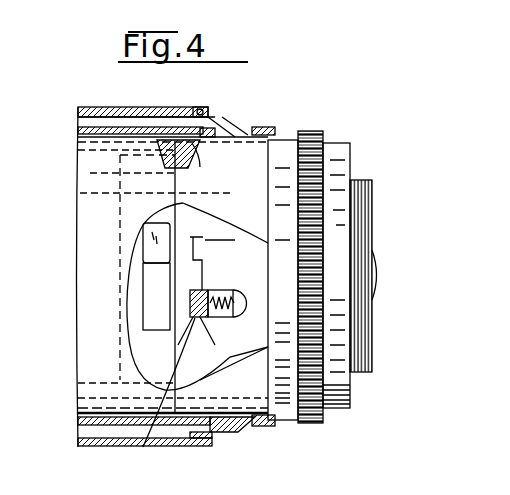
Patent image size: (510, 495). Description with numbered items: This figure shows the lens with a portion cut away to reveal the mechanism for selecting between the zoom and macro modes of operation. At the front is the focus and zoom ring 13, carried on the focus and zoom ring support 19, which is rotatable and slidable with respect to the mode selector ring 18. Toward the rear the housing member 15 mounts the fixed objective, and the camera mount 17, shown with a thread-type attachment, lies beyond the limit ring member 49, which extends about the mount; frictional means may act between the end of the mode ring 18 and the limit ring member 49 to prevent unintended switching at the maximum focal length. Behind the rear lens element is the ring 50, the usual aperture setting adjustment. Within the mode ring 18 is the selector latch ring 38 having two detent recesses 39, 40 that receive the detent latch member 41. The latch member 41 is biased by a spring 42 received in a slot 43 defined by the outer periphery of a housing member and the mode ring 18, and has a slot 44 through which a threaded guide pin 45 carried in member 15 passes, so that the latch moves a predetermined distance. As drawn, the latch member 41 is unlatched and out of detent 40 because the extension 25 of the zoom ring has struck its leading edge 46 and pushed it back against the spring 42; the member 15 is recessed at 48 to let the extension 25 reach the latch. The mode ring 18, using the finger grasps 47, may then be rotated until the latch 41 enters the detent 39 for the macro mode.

The focus and zoom ring 13 is at (118, 107).
The housing member 15 is at (160, 170).
The camera mount 17 is at (353, 180).
The mode selector ring 18 is at (222, 145).
The focus and zoom ring support 19 is at (145, 130).
The extension 25 is at (165, 147).
The selector latch ring 38 is at (170, 150).
The detent recess 39 is at (205, 240).
The detent recess 40 is at (200, 280).
The detent latch member 41 is at (238, 352).
The spring 42 is at (235, 290).
The slot 43 is at (237, 313).
The slot 44 is at (183, 330).
The threaded guide pin 45 is at (188, 303).
The leading edge 46 is at (170, 295).
The finger grasps 47 is at (260, 127).
The recess 48 is at (185, 150).
The limit ring member 49 is at (283, 163).
The aperture setting adjustment ring 50 is at (350, 393).